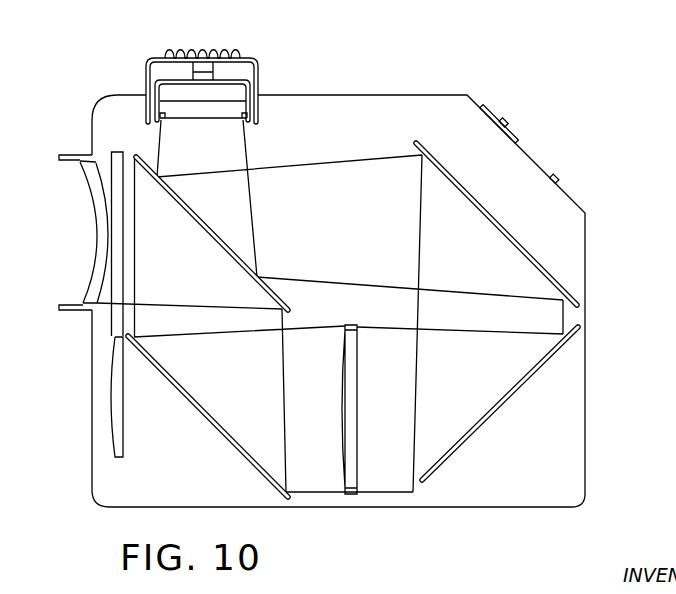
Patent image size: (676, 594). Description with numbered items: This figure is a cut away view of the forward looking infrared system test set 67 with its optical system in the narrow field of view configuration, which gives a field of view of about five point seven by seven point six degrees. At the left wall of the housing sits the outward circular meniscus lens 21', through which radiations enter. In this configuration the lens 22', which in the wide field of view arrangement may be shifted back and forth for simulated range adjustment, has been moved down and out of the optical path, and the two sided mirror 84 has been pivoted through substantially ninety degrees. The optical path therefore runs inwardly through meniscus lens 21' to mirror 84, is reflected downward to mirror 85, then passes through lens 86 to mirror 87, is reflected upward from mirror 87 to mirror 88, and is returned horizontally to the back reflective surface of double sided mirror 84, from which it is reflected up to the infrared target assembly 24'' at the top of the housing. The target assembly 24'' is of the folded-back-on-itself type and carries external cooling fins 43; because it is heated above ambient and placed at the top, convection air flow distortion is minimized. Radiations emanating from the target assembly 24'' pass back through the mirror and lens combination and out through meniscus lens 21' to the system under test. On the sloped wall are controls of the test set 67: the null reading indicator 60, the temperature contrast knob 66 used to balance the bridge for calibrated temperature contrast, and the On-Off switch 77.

The test set 67 is at (594, 411).
The meniscus lens 21' is at (67, 232).
The lens 22' is at (151, 397).
The infrared target assembly 24'' is at (233, 77).
The external cooling fins 43 is at (172, 50).
The null reading indicator 60 is at (487, 110).
The temperature contrast knob 66 is at (507, 122).
The On-Off switch 77 is at (560, 174).
The two sided mirror 84 is at (177, 202).
The mirror 85 is at (200, 407).
The lens 86 is at (357, 398).
The mirror 87 is at (465, 435).
The mirror 88 is at (457, 188).